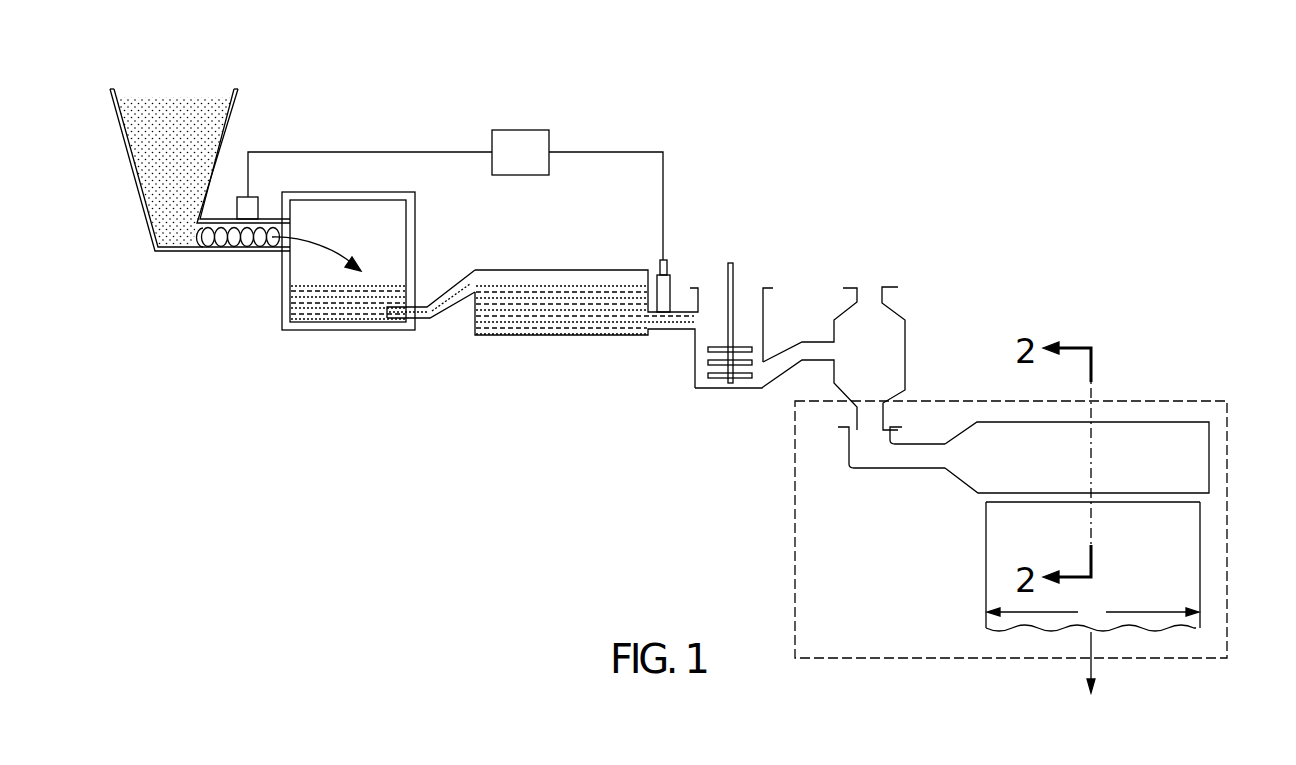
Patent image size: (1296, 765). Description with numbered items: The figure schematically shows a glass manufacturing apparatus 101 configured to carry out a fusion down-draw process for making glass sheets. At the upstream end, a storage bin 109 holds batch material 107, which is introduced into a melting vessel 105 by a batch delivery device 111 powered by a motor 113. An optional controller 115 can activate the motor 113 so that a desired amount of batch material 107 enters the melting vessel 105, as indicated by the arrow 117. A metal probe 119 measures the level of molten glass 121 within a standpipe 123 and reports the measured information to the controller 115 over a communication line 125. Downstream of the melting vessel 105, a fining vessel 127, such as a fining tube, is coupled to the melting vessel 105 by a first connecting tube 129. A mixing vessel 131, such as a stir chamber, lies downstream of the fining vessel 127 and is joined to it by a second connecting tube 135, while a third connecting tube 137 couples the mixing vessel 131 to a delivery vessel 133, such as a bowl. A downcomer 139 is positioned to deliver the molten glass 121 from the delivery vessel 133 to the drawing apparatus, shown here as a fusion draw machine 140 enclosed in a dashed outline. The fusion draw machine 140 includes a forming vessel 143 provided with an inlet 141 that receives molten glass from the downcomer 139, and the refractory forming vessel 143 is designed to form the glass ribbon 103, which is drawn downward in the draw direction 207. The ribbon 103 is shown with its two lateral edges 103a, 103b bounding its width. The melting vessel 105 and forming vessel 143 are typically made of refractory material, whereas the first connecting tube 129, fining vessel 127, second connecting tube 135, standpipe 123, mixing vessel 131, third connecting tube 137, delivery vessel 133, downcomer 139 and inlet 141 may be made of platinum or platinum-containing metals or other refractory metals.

The glass manufacturing apparatus 101 is at (932, 148).
The glass ribbon 103 is at (1096, 566).
The first edge of substrate 103a is at (986, 560).
The second edge of substrate 103b is at (1201, 572).
The melting vessel 105 is at (340, 318).
The batch material 107 is at (166, 97).
The storage bin 109 is at (130, 170).
The batch delivery device 111 is at (228, 247).
The motor 113 is at (258, 196).
The controller 115 is at (517, 130).
The arrow 117 is at (310, 241).
The metal probe 119 is at (658, 262).
The molten glass 121 is at (385, 285).
The standpipe 123 is at (671, 283).
The communication line 125 is at (600, 151).
The fining vessel 127 is at (552, 270).
The first connecting tube 129 is at (448, 288).
The mixing vessel 131 is at (770, 310).
The delivery vessel 133 is at (907, 330).
The second connecting tube 135 is at (675, 331).
The third connecting tube 137 is at (787, 373).
The downcomer 139 is at (884, 418).
The fusion draw machine 140 is at (1221, 400).
The inlet 141 is at (848, 450).
The forming vessel 143 is at (1161, 421).
The draw direction 207 is at (1094, 668).